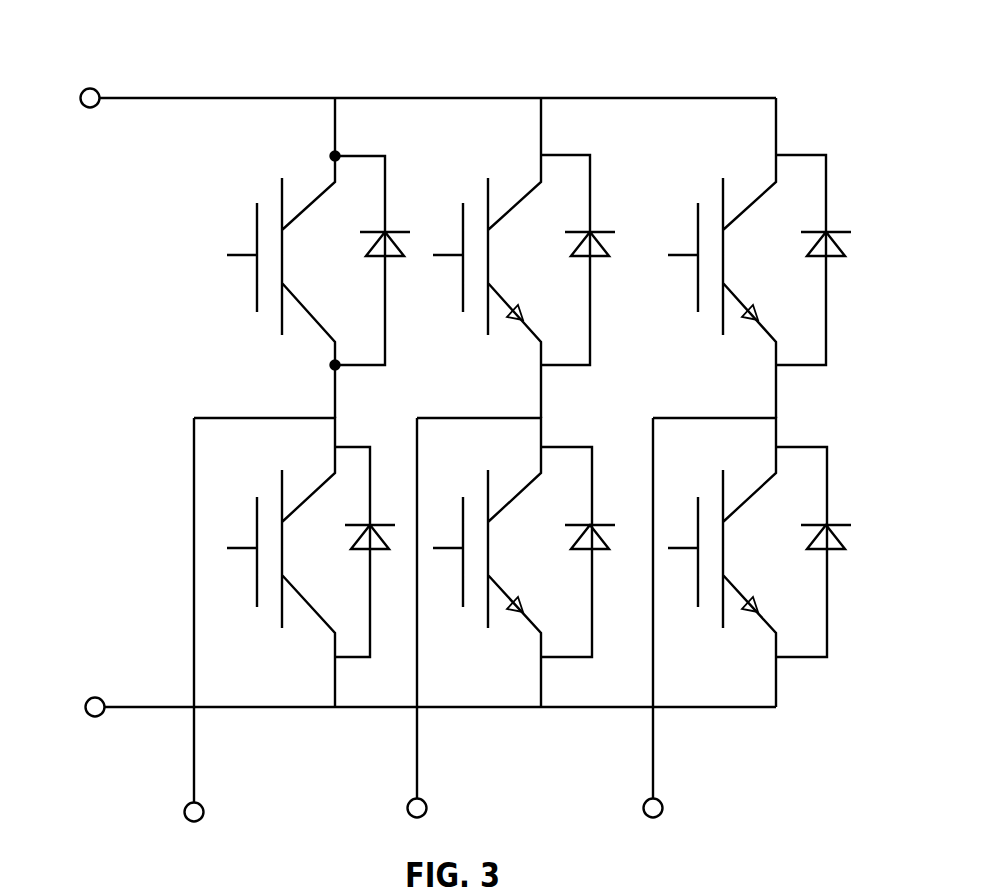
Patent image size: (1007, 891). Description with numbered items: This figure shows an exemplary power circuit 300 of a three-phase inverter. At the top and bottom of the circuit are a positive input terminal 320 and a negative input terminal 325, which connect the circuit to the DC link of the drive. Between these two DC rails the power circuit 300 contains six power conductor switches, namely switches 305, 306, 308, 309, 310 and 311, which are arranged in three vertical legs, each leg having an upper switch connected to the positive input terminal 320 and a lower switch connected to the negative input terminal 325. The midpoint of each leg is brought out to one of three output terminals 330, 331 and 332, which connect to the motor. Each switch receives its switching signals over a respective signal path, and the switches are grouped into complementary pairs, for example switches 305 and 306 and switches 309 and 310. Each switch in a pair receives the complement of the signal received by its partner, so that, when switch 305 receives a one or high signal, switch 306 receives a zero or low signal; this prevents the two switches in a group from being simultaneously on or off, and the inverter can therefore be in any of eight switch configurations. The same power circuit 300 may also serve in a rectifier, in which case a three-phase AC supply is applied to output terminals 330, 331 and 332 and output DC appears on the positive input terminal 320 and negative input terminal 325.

The power circuit 300 is at (812, 67).
The power conductor switch 305 is at (318, 195).
The power conductor switch 306 is at (313, 490).
The power conductor switch 308 is at (520, 492).
The power conductor switch 309 is at (532, 187).
The power conductor switch 310 is at (755, 198).
The power conductor switch 311 is at (760, 492).
The positive input terminal 320 is at (100, 92).
The negative input terminal 325 is at (105, 700).
The output terminal 330 is at (194, 793).
The output terminal 331 is at (417, 787).
The output terminal 332 is at (653, 787).